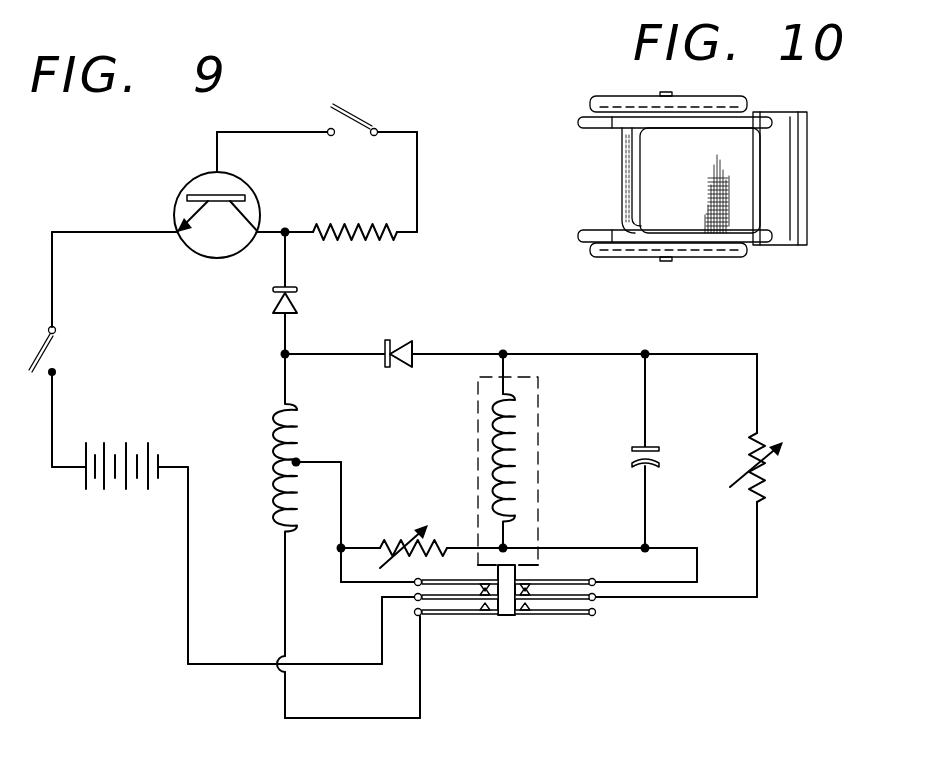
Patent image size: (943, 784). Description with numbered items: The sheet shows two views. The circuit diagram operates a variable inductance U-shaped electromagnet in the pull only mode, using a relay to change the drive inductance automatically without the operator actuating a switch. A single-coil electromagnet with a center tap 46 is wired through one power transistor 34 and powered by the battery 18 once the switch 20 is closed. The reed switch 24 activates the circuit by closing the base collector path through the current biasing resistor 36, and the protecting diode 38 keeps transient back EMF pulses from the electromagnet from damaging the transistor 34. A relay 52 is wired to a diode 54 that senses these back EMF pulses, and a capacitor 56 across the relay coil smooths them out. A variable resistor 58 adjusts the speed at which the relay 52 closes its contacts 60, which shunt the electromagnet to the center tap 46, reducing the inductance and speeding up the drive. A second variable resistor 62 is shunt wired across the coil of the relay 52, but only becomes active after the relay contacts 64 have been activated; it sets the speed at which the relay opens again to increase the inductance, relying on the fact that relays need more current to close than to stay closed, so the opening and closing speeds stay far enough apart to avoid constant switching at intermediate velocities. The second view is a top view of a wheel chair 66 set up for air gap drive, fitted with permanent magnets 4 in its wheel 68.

In FIG. 10, the permanent magnets 4 is at (690, 248).
In FIG. 9, the battery 18 is at (140, 490).
In FIG. 9, the switch 20 is at (45, 358).
In FIG. 9, the reed switch 24 is at (343, 103).
In FIG. 9, the power transistor 34 is at (198, 183).
In FIG. 9, the current biasing resistor 36 is at (383, 238).
In FIG. 9, the protecting diode 38 is at (278, 311).
In FIG. 9, the center tap 46 is at (297, 460).
In FIG. 9, the relay 52 is at (515, 438).
In FIG. 9, the diode 54 is at (403, 340).
In FIG. 9, the capacitor 56 is at (655, 448).
In FIG. 9, the variable resistor 58 is at (428, 528).
In FIG. 9, the relay contacts 60 is at (490, 616).
In FIG. 9, the variable resistor 62 is at (770, 482).
In FIG. 9, the relay contacts 64 is at (525, 616).
In FIG. 10, the wheel chair 66 is at (795, 178).
In FIG. 10, the wheel 68 is at (625, 258).